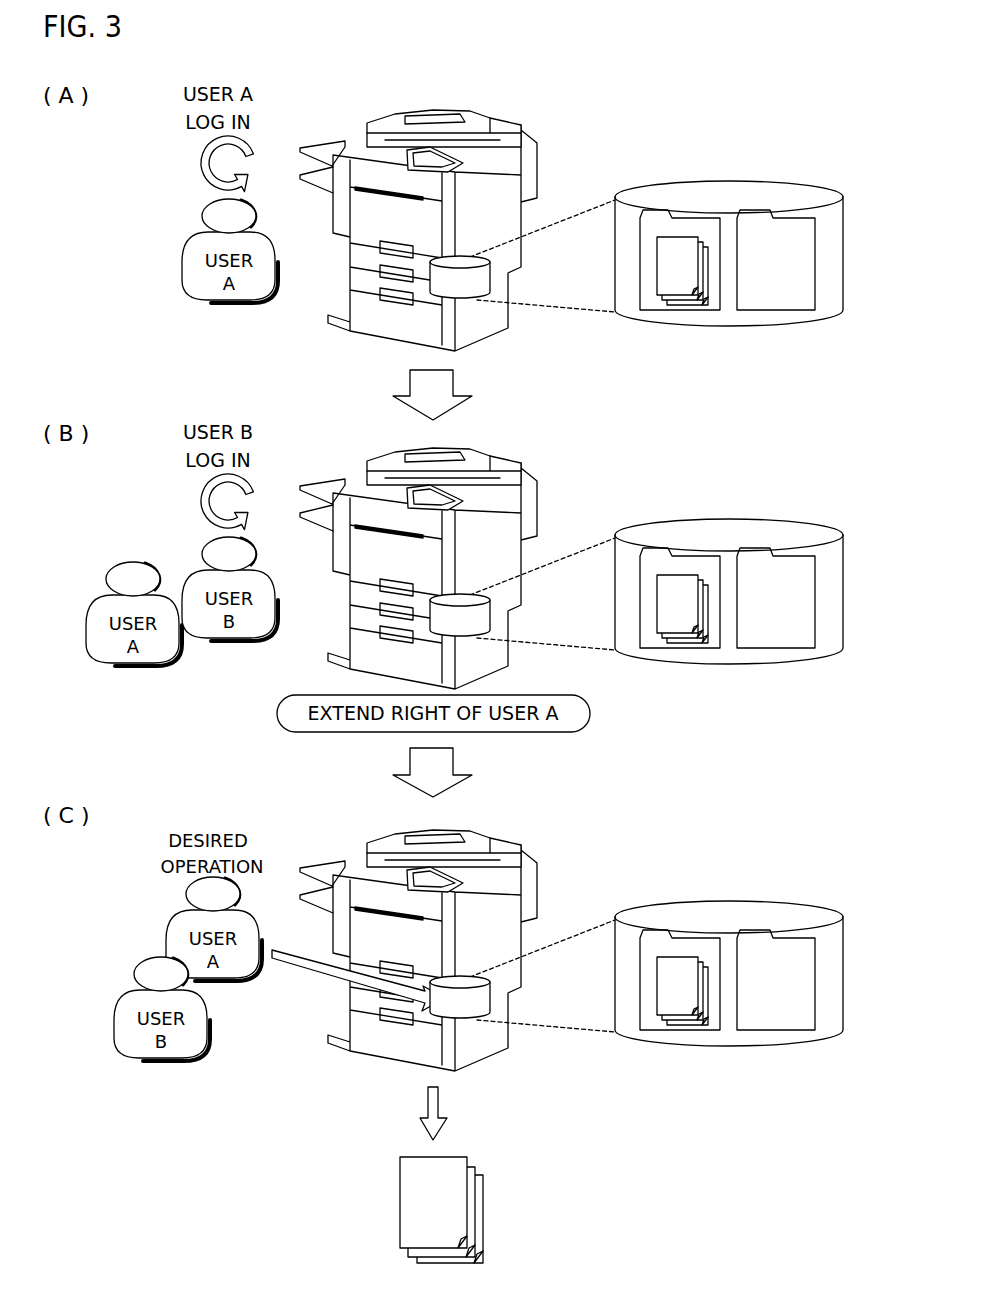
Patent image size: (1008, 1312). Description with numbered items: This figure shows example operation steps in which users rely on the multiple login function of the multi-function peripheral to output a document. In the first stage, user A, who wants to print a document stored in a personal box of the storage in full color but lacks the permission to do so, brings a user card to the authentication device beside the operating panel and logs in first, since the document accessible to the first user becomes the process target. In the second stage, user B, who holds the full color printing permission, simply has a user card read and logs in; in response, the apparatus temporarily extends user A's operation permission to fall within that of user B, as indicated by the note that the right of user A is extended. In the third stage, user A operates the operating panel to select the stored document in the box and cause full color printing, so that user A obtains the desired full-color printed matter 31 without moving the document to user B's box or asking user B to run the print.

The full-color printed matter 31 is at (447, 1208).